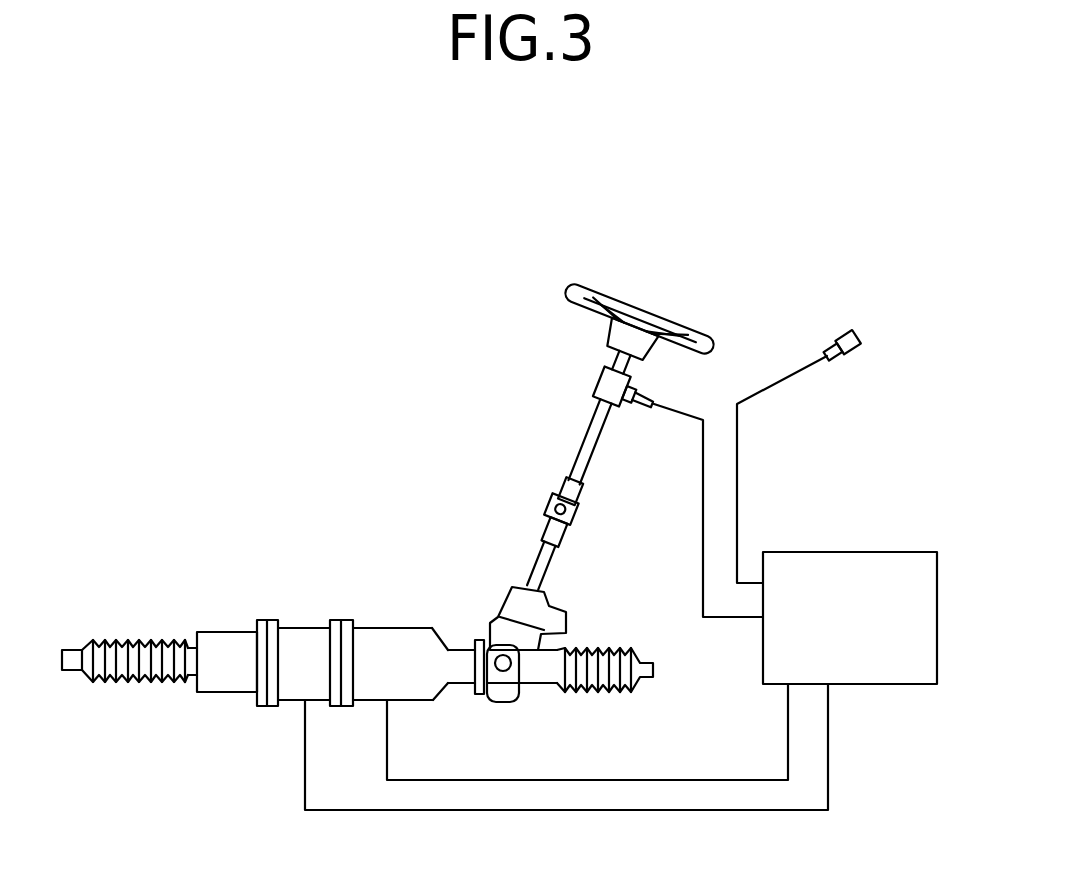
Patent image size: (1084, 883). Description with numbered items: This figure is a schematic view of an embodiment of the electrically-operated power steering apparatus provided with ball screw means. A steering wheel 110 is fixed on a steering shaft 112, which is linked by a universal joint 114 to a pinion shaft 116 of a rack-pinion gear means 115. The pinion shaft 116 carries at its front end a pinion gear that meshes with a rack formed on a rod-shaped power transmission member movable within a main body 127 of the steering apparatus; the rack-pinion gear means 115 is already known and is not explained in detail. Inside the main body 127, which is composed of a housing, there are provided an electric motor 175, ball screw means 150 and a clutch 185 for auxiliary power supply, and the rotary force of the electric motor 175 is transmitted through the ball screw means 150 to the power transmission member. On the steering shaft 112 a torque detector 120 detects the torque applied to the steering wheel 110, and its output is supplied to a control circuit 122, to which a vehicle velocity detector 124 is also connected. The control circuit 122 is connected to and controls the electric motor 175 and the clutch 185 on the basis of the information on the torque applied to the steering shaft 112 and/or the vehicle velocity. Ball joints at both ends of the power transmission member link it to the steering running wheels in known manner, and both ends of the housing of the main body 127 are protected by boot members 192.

The steering wheel 110 is at (675, 333).
The steering shaft 112 is at (586, 441).
The universal joint 114 is at (584, 510).
The rack-pinion gear means 115 is at (510, 584).
The pinion shaft 116 is at (548, 576).
The torque detector 120 is at (598, 375).
The control circuit 122 is at (891, 553).
The vehicle velocity detector 124 is at (832, 364).
The main body 127 is at (430, 628).
The ball screw means 150 is at (226, 630).
The electric motor 175 is at (394, 626).
The clutch 185 is at (306, 622).
The boot members 192 is at (140, 640).